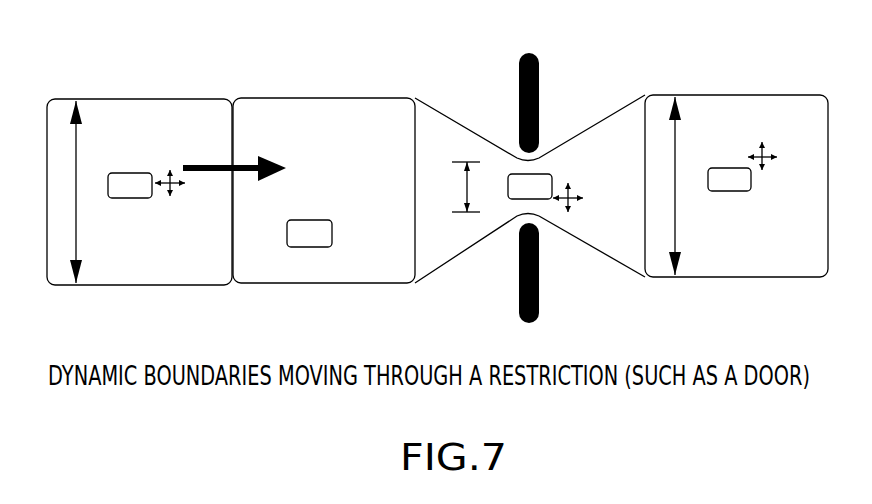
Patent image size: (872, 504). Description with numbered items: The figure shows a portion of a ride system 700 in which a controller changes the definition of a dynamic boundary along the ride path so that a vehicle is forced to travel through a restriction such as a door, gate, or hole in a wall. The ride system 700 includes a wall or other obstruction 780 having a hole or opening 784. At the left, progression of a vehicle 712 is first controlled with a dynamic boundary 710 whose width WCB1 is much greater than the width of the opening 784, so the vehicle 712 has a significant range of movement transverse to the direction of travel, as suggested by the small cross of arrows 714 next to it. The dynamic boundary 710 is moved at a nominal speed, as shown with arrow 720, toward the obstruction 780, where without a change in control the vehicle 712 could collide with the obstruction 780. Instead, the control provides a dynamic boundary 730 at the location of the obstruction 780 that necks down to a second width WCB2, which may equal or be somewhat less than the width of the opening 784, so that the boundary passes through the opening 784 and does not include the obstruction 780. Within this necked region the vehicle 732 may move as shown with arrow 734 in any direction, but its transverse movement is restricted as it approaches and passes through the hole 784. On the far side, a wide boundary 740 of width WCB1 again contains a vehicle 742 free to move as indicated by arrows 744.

The ride system 700 is at (745, 48).
The dynamic boundary 710 is at (84, 91).
The vehicle 712 is at (122, 198).
The vehicle movement directions 714 is at (173, 188).
The arrow 720 is at (247, 162).
The dynamic boundary 730 is at (450, 290).
The vehicle 732 is at (541, 173).
The arrow 734 is at (572, 203).
The dynamic boundary after restriction 740 is at (733, 292).
The vehicle after restriction 742 is at (728, 191).
The vehicle movement directions after restriction 744 is at (767, 150).
The obstruction 780 is at (542, 263).
The opening 784 is at (535, 219).